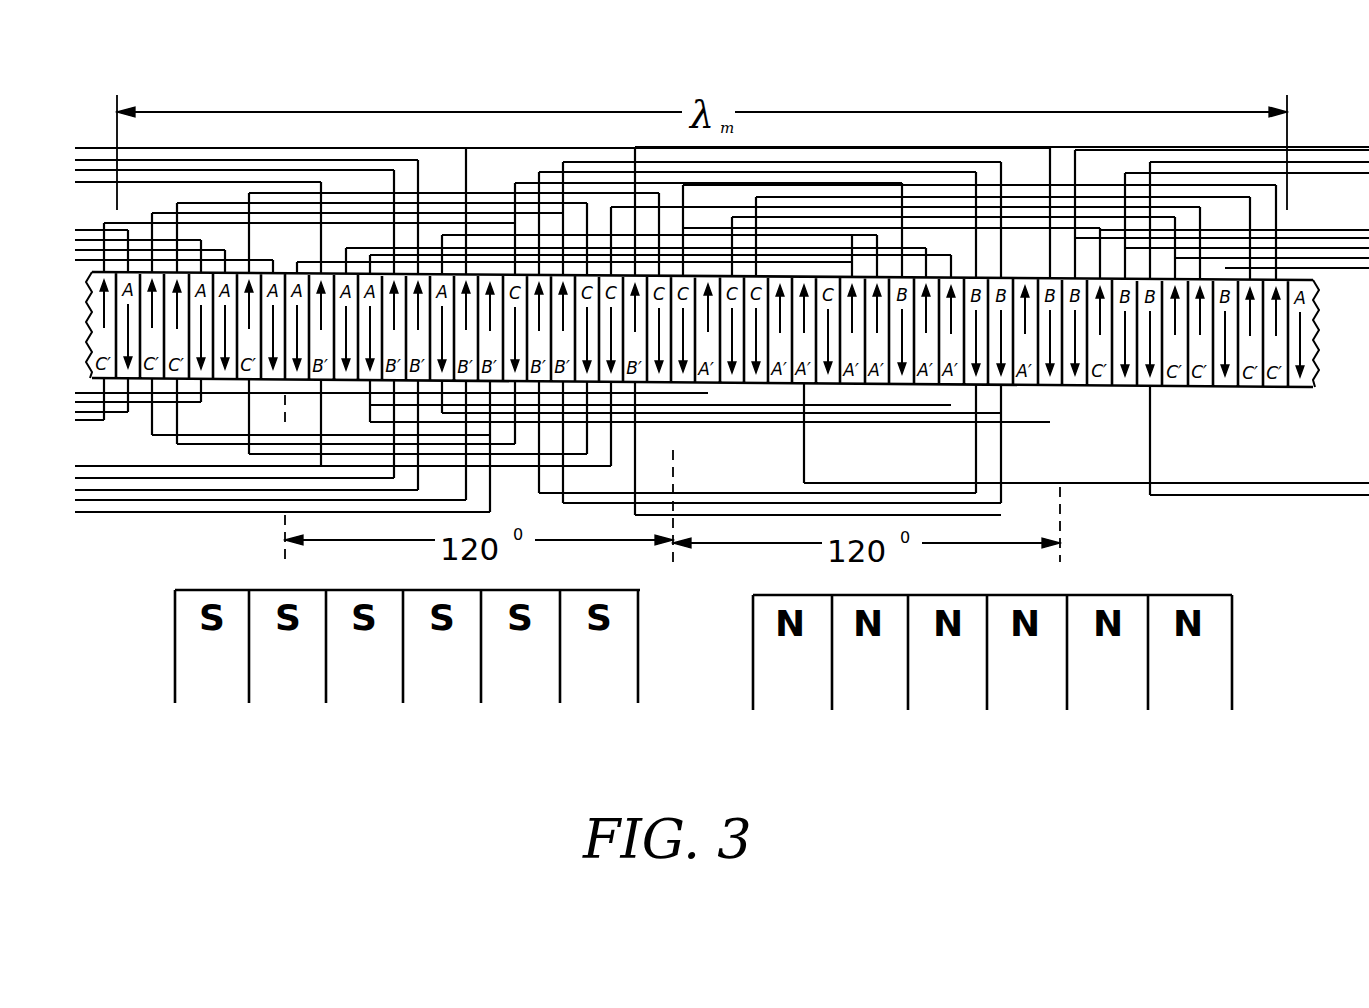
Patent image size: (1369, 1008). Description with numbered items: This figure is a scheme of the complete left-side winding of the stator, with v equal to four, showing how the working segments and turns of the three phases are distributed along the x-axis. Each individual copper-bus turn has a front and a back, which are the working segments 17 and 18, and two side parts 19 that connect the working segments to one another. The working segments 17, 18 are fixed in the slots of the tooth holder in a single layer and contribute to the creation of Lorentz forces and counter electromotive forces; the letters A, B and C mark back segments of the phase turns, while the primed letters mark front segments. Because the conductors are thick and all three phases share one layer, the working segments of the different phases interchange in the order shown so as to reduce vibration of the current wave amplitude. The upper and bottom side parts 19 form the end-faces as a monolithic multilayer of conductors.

The working segment 17 is at (707, 323).
The working segment 18 is at (275, 312).
The side part 19 is at (277, 393).